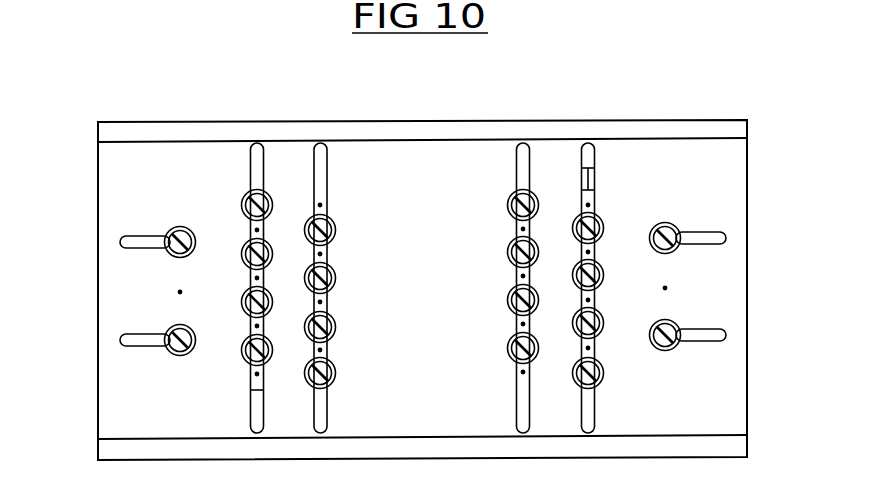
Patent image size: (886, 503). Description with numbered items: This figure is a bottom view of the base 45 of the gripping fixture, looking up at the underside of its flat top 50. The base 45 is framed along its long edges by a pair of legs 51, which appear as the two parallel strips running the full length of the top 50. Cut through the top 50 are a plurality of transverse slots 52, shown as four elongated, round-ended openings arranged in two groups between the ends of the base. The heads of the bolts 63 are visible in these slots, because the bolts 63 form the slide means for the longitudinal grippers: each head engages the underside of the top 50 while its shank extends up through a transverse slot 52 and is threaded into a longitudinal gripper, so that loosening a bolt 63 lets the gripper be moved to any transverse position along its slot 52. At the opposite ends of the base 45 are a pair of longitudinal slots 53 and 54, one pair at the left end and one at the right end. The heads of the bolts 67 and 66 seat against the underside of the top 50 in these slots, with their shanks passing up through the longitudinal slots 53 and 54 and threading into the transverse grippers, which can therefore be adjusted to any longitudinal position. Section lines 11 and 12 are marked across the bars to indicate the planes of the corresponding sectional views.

The base 45 is at (430, 256).
The flat top 50 is at (115, 167).
The legs 51 is at (735, 130).
The transverse slots 52 is at (258, 142).
The bolts 63 is at (266, 195).
The longitudinal slot 53 is at (120, 242).
The longitudinal slot 54 is at (727, 238).
The bolt 67 is at (180, 258).
The bolt 66 is at (667, 254).
The section line 11- 11 is at (503, 228).
The section line 12- 12 is at (588, 168).